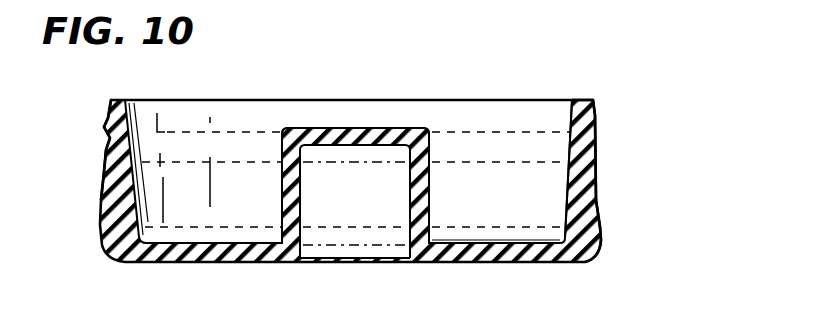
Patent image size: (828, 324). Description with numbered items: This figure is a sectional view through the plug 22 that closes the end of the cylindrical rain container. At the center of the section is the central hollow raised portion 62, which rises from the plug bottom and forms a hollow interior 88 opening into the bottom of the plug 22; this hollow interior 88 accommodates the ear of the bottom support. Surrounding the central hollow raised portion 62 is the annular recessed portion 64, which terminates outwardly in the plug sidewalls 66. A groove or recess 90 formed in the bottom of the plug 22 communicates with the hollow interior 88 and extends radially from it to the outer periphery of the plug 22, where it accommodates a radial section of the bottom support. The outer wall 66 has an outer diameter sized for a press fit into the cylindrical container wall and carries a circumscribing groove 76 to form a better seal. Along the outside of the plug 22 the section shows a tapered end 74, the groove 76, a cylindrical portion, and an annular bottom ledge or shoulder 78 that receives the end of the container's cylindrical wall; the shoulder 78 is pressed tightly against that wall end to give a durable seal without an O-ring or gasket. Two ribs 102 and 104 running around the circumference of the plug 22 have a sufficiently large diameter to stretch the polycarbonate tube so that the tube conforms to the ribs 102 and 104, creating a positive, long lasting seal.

The plug 22 is at (490, 50).
The central hollow raised portion 62 is at (371, 127).
The annular recessed portion 64 is at (483, 180).
The plug sidewalls 66 is at (599, 183).
The tapered end 74 is at (592, 100).
The circumscribing groove 76 is at (596, 143).
The annular bottom ledge or shoulder 78 is at (598, 225).
The hollow interior 88 is at (365, 203).
The groove or recess 90 is at (388, 250).
The rib 102 is at (110, 113).
The rib 104 is at (107, 170).